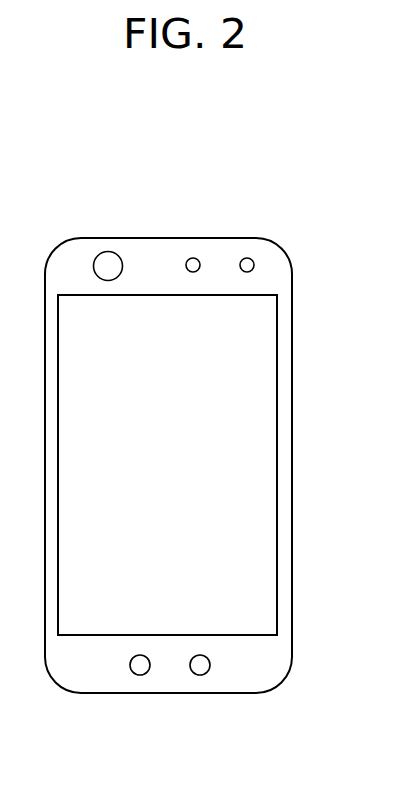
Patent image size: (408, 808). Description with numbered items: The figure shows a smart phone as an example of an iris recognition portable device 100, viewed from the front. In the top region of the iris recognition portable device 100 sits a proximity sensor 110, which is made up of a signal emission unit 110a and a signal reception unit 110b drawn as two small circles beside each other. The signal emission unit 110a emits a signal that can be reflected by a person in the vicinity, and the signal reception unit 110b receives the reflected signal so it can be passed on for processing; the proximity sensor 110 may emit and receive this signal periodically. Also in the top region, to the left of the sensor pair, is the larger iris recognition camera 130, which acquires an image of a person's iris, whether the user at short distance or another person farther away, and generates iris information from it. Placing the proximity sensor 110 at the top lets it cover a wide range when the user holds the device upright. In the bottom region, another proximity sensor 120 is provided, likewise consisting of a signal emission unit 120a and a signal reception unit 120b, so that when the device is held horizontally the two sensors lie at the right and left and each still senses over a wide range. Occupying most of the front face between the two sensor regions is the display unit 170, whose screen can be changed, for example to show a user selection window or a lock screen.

The iris recognition portable device 100 is at (148, 121).
The proximity sensor 110 is at (220, 208).
The signal emission unit 110a is at (192, 258).
The signal reception unit 110b is at (247, 228).
The proximity sensor 120 is at (173, 715).
The signal emission unit 120a is at (140, 675).
The signal reception unit 120b is at (202, 699).
The iris recognition camera 130 is at (106, 256).
The display unit 170 is at (260, 473).